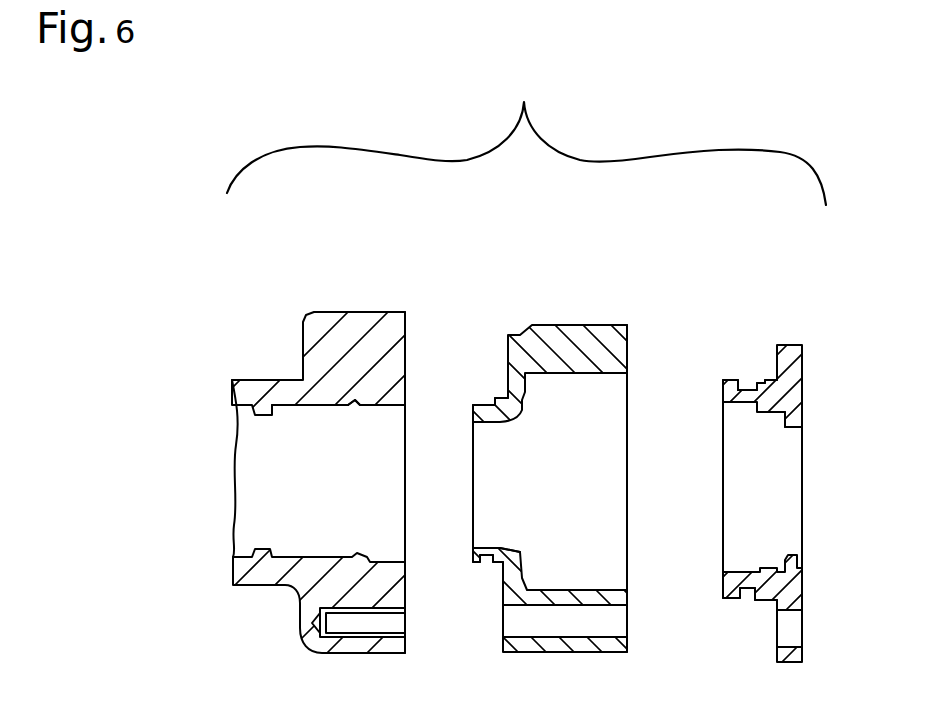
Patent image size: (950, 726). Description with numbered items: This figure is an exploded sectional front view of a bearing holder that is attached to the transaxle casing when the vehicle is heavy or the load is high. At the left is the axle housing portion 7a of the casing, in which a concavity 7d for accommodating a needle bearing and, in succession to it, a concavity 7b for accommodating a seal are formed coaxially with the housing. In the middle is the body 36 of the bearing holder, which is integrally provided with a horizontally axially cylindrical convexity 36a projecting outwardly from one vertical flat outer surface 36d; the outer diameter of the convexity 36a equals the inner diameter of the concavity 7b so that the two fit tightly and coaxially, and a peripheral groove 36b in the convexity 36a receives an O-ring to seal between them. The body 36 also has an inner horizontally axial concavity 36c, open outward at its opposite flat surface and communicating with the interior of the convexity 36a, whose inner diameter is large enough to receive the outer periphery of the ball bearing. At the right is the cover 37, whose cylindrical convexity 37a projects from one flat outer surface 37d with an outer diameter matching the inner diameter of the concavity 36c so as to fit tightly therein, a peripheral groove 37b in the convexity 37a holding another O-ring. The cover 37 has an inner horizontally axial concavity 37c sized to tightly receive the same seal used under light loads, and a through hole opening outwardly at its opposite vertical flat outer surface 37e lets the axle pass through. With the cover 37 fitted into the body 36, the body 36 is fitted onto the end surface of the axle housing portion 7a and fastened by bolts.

The axle housing portion 7a is at (330, 312).
The concavity 7b is at (398, 402).
The concavity 7d is at (322, 406).
The body 36 is at (606, 325).
The convexity 36a is at (473, 553).
The groove 36b is at (488, 400).
The concavity 36c is at (611, 374).
The vertical flat outer surface 36d is at (498, 548).
The cover 37 is at (790, 345).
The convexity 37a is at (723, 392).
The groove 37b is at (746, 380).
The concavity 37c is at (770, 568).
The flat outer surface 37d is at (747, 408).
The vertical flat outer surface 37e is at (797, 428).